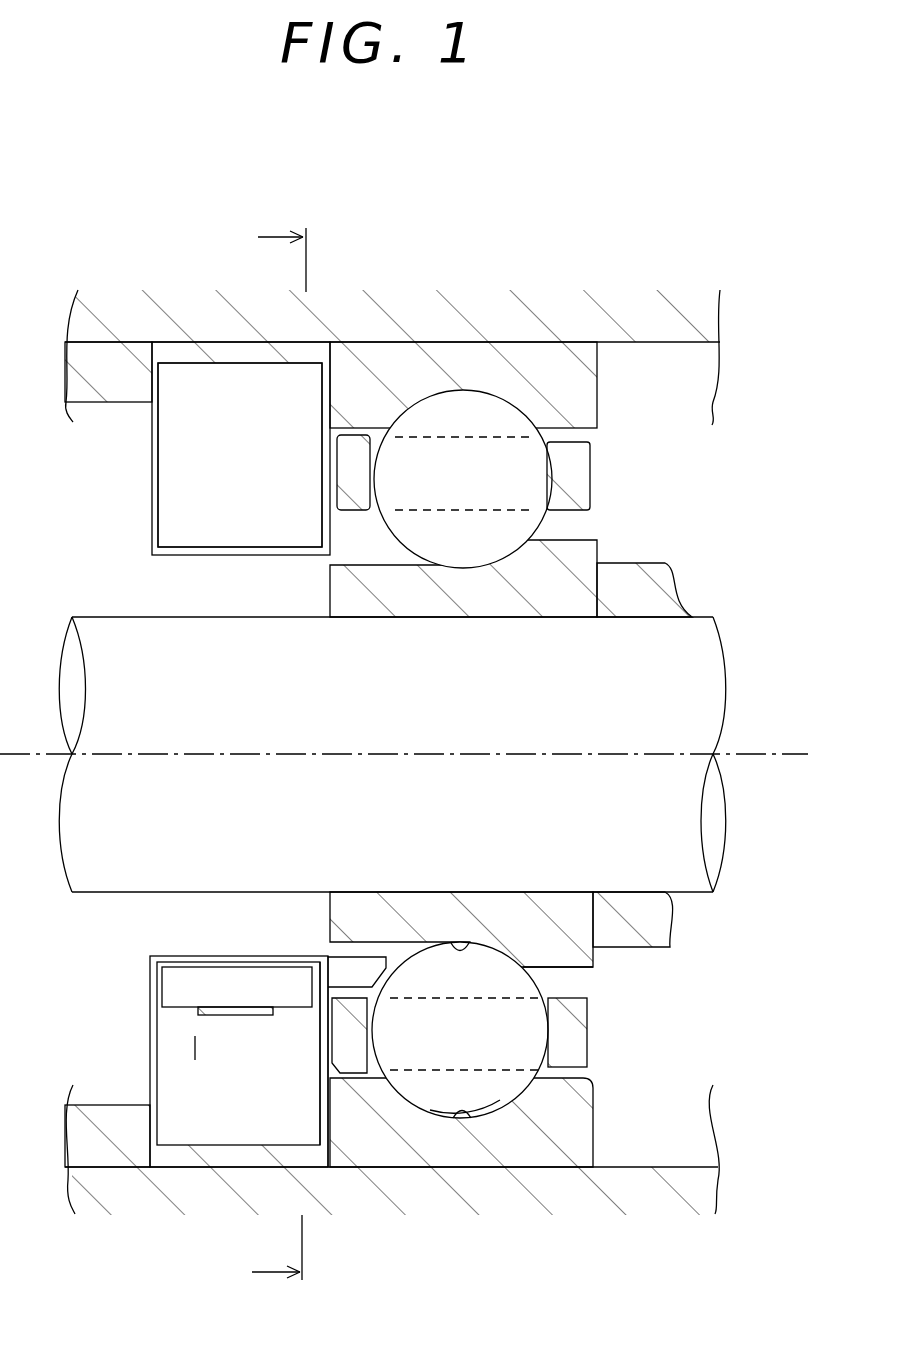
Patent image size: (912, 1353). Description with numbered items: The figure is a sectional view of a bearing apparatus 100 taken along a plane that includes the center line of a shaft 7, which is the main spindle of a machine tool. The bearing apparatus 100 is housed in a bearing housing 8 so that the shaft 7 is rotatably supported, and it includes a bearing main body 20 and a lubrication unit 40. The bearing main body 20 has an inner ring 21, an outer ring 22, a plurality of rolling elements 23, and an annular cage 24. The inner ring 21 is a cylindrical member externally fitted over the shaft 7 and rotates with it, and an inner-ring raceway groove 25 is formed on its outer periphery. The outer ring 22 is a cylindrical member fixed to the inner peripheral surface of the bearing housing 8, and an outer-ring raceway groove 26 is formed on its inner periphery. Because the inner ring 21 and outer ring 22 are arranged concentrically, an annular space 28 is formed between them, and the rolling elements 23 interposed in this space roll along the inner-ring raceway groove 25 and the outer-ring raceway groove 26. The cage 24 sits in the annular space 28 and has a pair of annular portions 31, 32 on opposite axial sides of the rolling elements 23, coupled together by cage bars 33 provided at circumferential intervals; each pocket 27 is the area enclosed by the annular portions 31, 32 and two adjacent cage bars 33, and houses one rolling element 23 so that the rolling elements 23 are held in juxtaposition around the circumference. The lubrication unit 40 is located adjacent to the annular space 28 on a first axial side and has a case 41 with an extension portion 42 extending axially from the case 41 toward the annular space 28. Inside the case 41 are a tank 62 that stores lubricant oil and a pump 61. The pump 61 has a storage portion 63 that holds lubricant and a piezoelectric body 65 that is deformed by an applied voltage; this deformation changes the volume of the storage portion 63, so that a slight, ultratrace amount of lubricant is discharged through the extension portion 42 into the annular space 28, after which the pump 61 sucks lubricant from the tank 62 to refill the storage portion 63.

The bearing apparatus 100 is at (620, 234).
The shaft 7 is at (695, 617).
The bearing housing 8 is at (675, 347).
The bearing main body 20 is at (530, 335).
The inner ring 21 is at (536, 955).
The outer ring 22 is at (558, 1150).
The rolling elements 23 is at (498, 1097).
The cage 24 is at (352, 1075).
The inner-ring raceway groove 25 is at (460, 942).
The outer-ring raceway groove 26 is at (462, 1112).
The pockets 27 is at (411, 1015).
The annular space 28 is at (594, 985).
The annular portion 31 is at (326, 1055).
The annular portion 32 is at (590, 1038).
The cage bars 33 is at (525, 995).
The lubrication unit 40 is at (196, 696).
The case 41 is at (152, 500).
The extension portion 42 is at (354, 955).
The pump 61 is at (197, 1038).
The tank 62 is at (258, 467).
The storage portion 63 is at (256, 1003).
The piezoelectric body 65 is at (200, 1015).